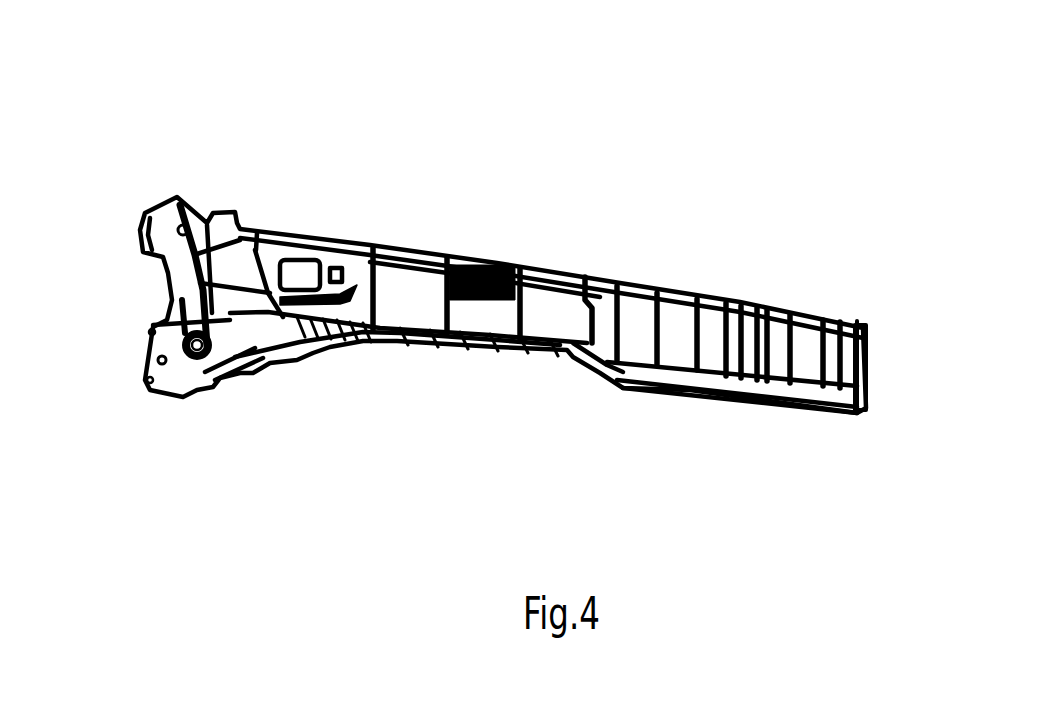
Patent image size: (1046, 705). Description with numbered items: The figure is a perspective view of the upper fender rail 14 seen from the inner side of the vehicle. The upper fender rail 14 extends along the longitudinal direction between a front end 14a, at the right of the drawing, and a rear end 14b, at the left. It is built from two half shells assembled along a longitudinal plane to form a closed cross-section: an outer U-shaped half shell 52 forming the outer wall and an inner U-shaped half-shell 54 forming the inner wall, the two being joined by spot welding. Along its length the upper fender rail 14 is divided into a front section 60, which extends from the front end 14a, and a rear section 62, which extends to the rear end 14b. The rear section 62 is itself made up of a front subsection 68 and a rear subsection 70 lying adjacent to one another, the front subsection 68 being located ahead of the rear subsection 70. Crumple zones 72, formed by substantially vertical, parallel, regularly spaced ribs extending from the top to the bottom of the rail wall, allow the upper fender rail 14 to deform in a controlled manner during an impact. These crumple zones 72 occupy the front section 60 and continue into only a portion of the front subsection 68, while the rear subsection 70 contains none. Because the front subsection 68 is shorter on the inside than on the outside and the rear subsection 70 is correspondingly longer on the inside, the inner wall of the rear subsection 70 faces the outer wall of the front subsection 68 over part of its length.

The upper fender rail 14 is at (228, 122).
The front end 14a is at (872, 247).
The rear end 14b is at (155, 190).
The inner U-shaped half-shell 54 is at (143, 243).
The crumple zones 72 is at (798, 295).
The outer U-shaped half shell 52 is at (818, 400).
The rear subsection 70 is at (598, 400).
The front subsection 68 is at (732, 411).
The front section 60 is at (862, 421).
The rear section 62 is at (733, 486).